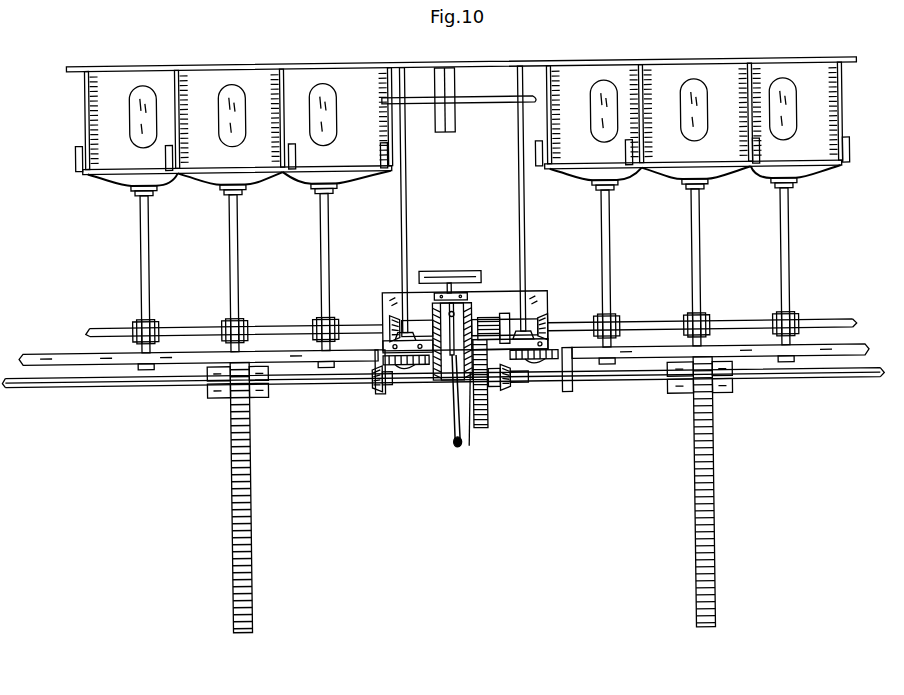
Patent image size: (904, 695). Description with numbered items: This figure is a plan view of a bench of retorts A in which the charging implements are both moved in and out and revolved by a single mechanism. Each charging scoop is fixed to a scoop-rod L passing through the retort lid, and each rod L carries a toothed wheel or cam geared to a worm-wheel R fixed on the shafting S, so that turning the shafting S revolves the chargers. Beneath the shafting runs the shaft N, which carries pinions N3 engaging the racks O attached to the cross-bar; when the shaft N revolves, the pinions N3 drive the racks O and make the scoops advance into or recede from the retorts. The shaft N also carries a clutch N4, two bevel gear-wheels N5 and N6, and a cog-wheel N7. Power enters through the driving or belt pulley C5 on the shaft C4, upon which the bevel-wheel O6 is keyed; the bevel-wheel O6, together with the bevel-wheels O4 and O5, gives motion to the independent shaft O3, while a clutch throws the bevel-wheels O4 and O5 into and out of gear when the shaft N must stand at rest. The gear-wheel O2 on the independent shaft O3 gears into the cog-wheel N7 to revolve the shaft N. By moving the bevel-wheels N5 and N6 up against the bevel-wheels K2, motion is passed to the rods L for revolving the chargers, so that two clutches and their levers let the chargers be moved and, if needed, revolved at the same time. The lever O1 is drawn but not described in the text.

The retort A is at (462, 129).
The scoop-rod L is at (472, 270).
The worm-wheel R is at (466, 313).
The shafting S is at (470, 319).
The shaft N is at (443, 391).
The pinion N3 is at (474, 393).
The clutch N4 is at (500, 388).
The bevel gear-wheel N5 is at (377, 392).
The bevel gear-wheel N6 is at (525, 383).
The cog-wheel N7 is at (486, 416).
The rack O is at (484, 494).
The hand lever O' O1 is at (487, 426).
The gear-wheel O2 is at (482, 327).
The independent shaft O3 is at (505, 327).
The bevel-wheel O4 is at (447, 382).
The bevel-wheel O5 is at (478, 413).
The bevel-wheel O6 is at (470, 301).
The bevel-wheel K2 is at (536, 357).
The shaft C4 is at (468, 291).
The driving or belt pulley C5 is at (462, 271).